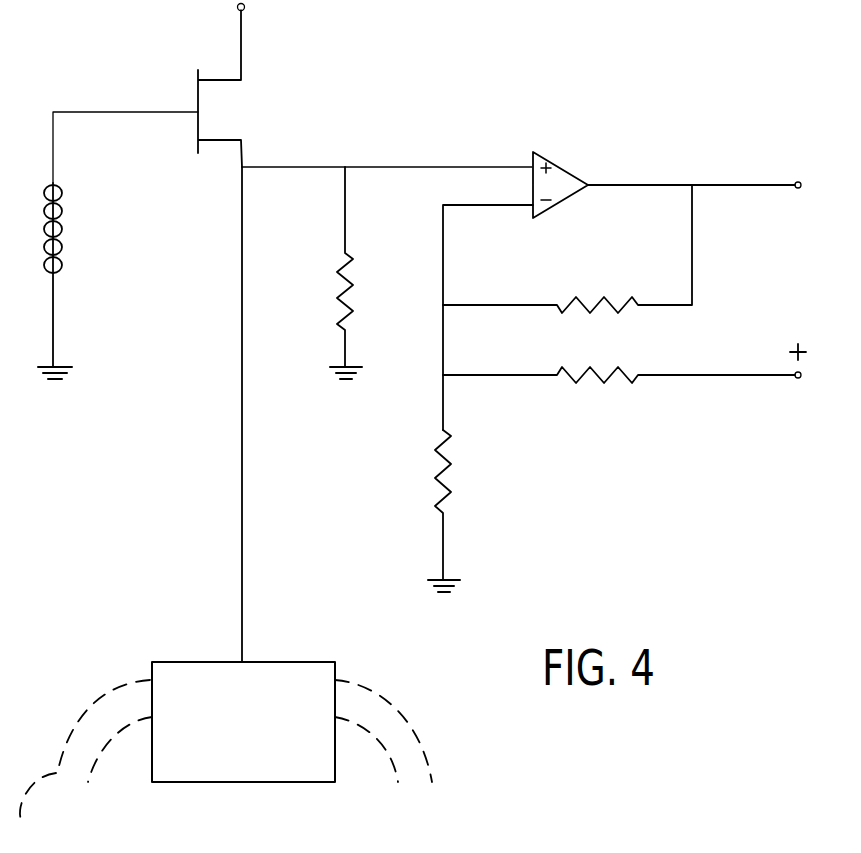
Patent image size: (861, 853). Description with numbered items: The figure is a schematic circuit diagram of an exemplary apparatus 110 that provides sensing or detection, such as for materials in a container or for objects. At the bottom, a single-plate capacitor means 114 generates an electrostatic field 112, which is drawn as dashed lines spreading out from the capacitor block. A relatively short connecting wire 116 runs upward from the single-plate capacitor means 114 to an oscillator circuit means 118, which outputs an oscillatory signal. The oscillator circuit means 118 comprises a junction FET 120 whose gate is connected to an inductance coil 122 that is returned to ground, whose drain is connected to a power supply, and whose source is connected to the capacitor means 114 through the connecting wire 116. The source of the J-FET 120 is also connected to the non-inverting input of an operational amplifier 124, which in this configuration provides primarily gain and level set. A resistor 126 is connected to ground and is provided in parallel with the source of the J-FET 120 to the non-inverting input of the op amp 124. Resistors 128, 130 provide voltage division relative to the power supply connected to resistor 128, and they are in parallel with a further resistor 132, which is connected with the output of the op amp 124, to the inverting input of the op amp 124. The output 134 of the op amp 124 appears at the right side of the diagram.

The apparatus 110 is at (340, 114).
The electrostatic field 112 is at (22, 822).
The single-plate capacitor means 114 is at (263, 782).
The connecting wire 116 is at (243, 433).
The oscillator circuit means 118 is at (133, 86).
The junction FET 120 is at (212, 114).
The inductance coil 122 is at (62, 239).
The operational amplifier 124 is at (570, 166).
The resistor 126 is at (350, 284).
The resistor 128 is at (587, 381).
The resistor 130 is at (450, 459).
The further resistor 132 is at (587, 293).
The output 134 is at (797, 190).